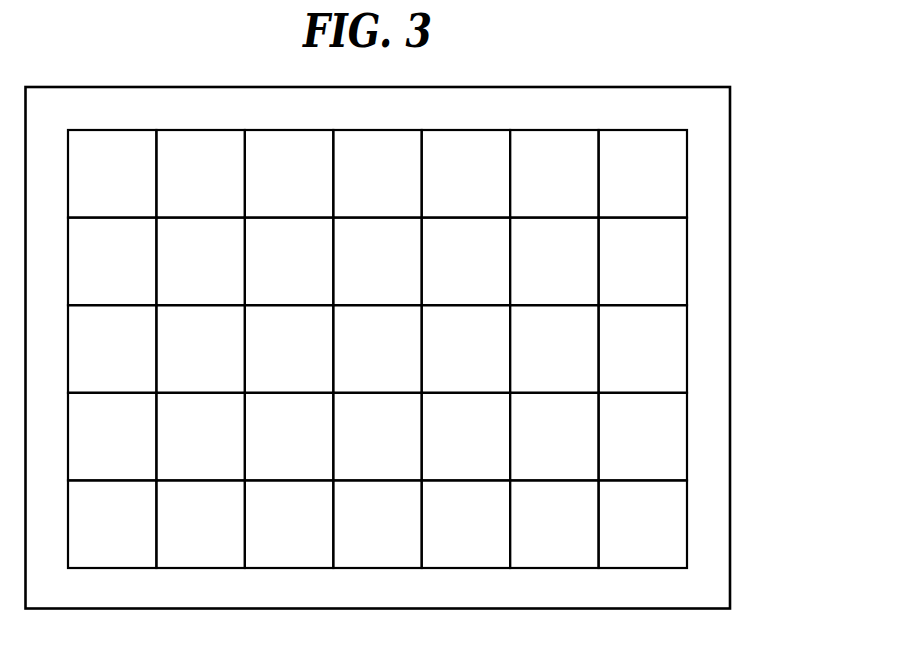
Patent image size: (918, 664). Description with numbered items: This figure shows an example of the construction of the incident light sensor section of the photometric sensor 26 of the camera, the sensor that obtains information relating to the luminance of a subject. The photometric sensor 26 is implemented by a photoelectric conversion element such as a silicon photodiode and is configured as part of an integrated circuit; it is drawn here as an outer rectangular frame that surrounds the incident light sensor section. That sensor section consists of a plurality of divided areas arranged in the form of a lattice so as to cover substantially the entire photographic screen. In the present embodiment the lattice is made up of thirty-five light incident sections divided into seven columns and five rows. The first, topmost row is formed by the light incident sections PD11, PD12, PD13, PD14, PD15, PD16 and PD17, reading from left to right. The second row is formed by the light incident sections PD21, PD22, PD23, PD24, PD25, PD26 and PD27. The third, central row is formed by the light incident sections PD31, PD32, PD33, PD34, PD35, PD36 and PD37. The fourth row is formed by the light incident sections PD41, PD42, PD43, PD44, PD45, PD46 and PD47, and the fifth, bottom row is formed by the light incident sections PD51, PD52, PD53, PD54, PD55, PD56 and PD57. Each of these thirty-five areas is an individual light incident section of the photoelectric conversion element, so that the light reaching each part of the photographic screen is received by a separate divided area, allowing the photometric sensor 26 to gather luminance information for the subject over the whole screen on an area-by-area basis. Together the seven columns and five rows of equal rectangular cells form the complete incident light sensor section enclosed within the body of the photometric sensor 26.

The photometric sensor 26 is at (707, 258).
The light incident section PD11 is at (112, 174).
The light incident section PD12 is at (200, 174).
The light incident section PD13 is at (289, 174).
The light incident section PD14 is at (377, 174).
The light incident section PD15 is at (466, 174).
The light incident section PD16 is at (554, 174).
The light incident section PD17 is at (643, 174).
The light incident section PD21 is at (112, 262).
The light incident section PD22 is at (200, 262).
The light incident section PD23 is at (289, 262).
The light incident section PD24 is at (377, 262).
The light incident section PD25 is at (466, 262).
The light incident section PD26 is at (554, 262).
The light incident section PD27 is at (643, 262).
The light incident section PD31 is at (112, 349).
The light incident section PD32 is at (200, 349).
The light incident section PD33 is at (289, 349).
The light incident section PD34 is at (377, 349).
The light incident section PD35 is at (466, 349).
The light incident section PD36 is at (554, 349).
The light incident section PD37 is at (643, 349).
The light incident section PD41 is at (112, 437).
The light incident section PD42 is at (200, 437).
The light incident section PD43 is at (289, 437).
The light incident section PD44 is at (377, 437).
The light incident section PD45 is at (466, 437).
The light incident section PD46 is at (554, 437).
The light incident section PD47 is at (643, 437).
The light incident section PD51 is at (112, 524).
The light incident section PD52 is at (200, 524).
The light incident section PD53 is at (289, 524).
The light incident section PD54 is at (377, 524).
The light incident section PD55 is at (466, 524).
The light incident section PD56 is at (554, 524).
The light incident section PD57 is at (643, 524).